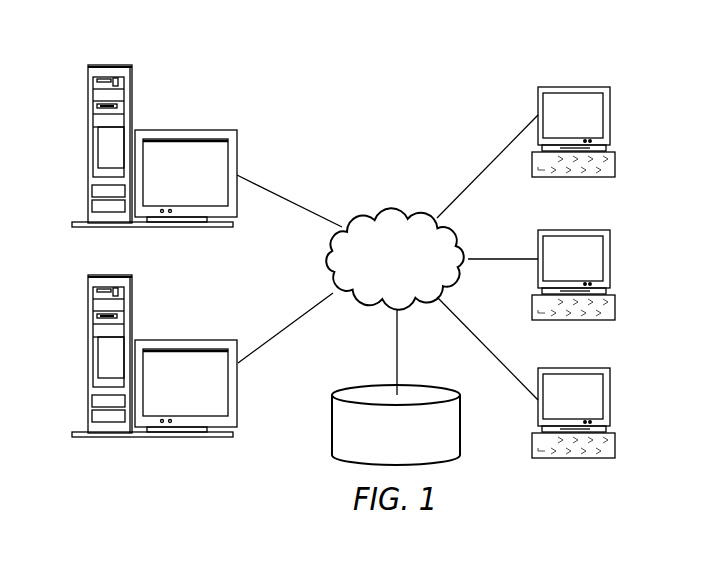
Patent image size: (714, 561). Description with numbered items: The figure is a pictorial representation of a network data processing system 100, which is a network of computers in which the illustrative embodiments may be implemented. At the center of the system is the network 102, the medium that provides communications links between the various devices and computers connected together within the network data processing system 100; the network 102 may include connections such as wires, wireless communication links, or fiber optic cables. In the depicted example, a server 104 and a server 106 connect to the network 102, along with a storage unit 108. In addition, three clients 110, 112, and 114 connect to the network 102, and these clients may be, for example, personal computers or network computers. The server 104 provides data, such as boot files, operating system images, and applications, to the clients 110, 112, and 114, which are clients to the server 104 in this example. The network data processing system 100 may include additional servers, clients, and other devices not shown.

The network data processing system 100 is at (445, 108).
The network 102 is at (370, 210).
The server 104 is at (88, 147).
The server 106 is at (88, 357).
The storage unit 108 is at (332, 437).
The client 110 is at (610, 115).
The client 112 is at (610, 258).
The client 114 is at (610, 400).